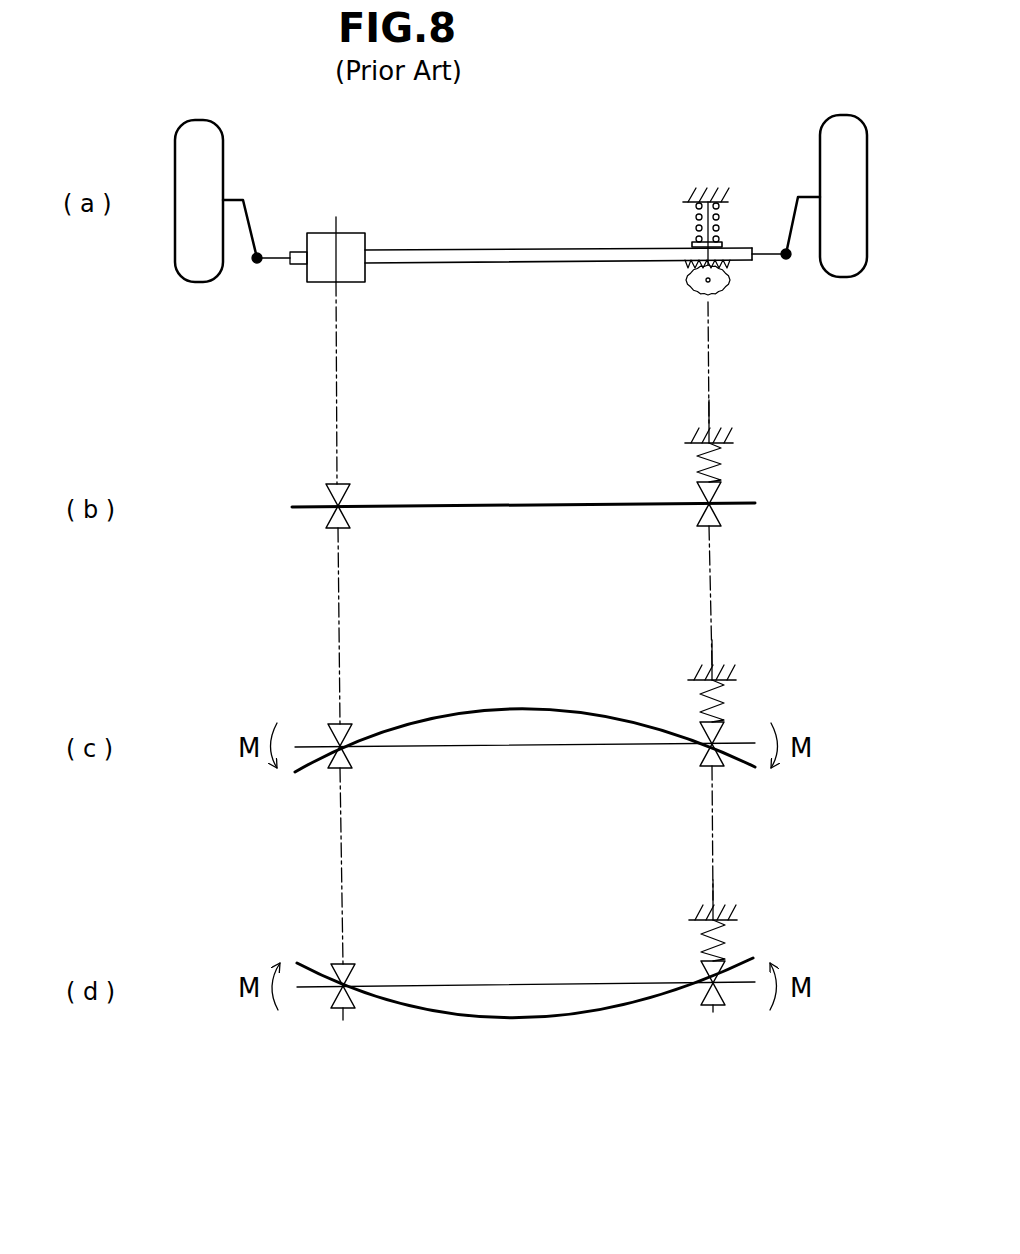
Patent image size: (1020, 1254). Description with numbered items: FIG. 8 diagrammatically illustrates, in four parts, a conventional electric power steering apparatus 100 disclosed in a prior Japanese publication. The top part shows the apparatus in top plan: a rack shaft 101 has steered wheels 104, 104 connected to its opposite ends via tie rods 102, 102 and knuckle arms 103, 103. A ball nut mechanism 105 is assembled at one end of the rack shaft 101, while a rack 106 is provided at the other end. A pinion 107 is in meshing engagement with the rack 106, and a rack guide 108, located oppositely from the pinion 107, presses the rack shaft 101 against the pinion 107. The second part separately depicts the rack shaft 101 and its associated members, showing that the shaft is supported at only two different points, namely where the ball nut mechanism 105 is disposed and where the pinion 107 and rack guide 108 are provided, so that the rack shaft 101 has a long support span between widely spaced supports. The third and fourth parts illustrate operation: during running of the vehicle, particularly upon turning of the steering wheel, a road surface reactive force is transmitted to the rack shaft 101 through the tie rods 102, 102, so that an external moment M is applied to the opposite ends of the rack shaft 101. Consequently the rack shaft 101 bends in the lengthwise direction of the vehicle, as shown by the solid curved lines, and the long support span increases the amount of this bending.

The steering apparatus 100 is at (567, 112).
The rack shaft 101 is at (476, 250).
The tie rods 102 is at (282, 264).
The knuckle arms 103 is at (250, 222).
The steered wheels 104 is at (223, 152).
The ball nut mechanism 105 is at (346, 232).
The rack 106 is at (685, 266).
The pinion 107 is at (697, 292).
The rack guide 108 is at (672, 228).